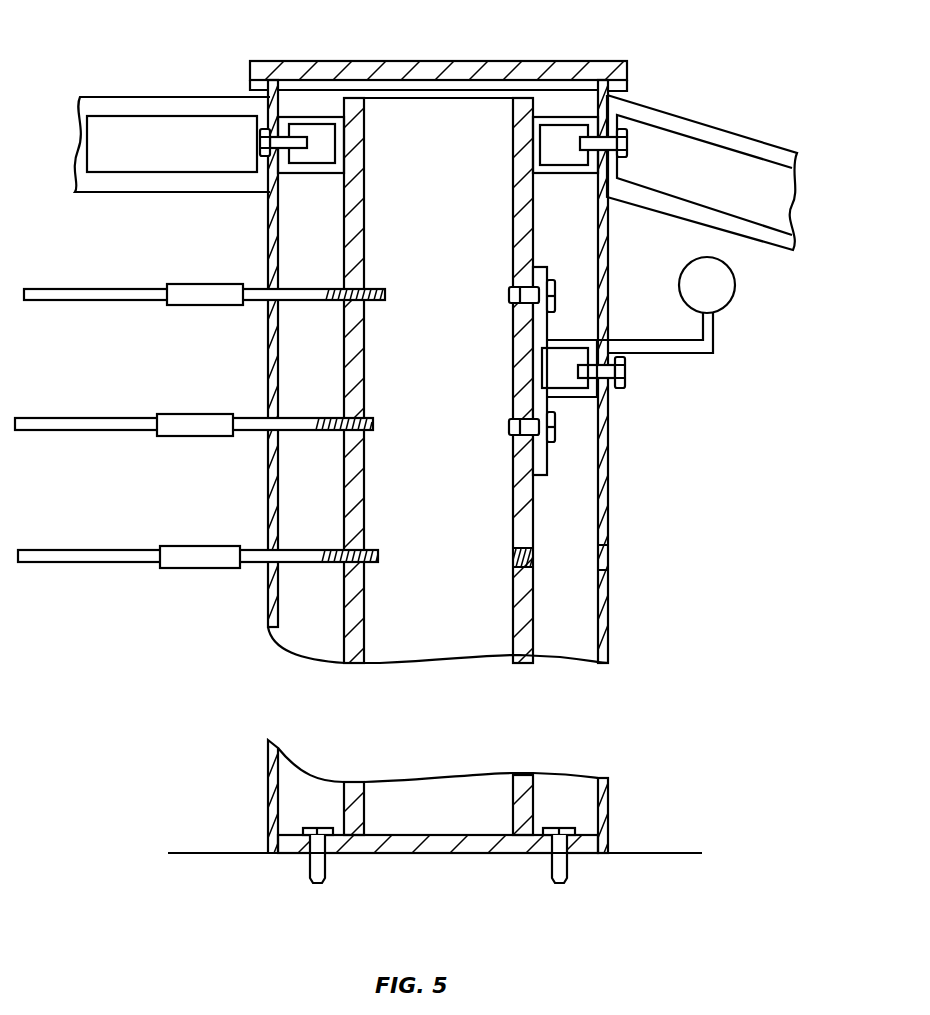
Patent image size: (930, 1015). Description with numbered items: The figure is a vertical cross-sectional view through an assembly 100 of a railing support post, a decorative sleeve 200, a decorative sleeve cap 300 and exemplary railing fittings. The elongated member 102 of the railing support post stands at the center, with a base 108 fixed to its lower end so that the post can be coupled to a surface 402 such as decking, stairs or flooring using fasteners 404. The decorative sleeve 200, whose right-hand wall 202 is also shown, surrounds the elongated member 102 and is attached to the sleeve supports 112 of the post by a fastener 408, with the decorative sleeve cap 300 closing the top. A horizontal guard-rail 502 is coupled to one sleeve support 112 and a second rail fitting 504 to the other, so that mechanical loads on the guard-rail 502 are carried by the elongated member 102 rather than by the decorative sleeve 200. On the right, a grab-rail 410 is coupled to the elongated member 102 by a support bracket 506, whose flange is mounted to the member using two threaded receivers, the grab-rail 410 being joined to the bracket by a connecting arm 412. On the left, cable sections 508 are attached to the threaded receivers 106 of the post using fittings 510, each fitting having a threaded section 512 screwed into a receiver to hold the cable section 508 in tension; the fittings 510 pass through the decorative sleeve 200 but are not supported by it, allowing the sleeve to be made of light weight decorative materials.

The pressure vessel assembly 100 is at (347, 700).
The elongated member 102 is at (457, 98).
The threaded receiver 106 is at (513, 550).
The base 108 is at (438, 853).
The sleeve support 112 is at (308, 117).
The decorative sleeve 200 is at (268, 240).
The right outer wall 202 is at (610, 557).
The decorative sleeve cap 300 is at (270, 62).
The surface 402 is at (670, 853).
The fasteners 404 is at (318, 883).
The fastener 408 is at (258, 155).
The grab-rail 410 is at (736, 284).
The gauge tube 412 is at (715, 349).
The horizontal guard-rail 502 is at (115, 98).
The right support arm 504 is at (712, 120).
The support bracket 506 is at (560, 400).
The cable sections 508 is at (96, 289).
The fittings 510 is at (212, 284).
The threaded section 512 is at (385, 292).